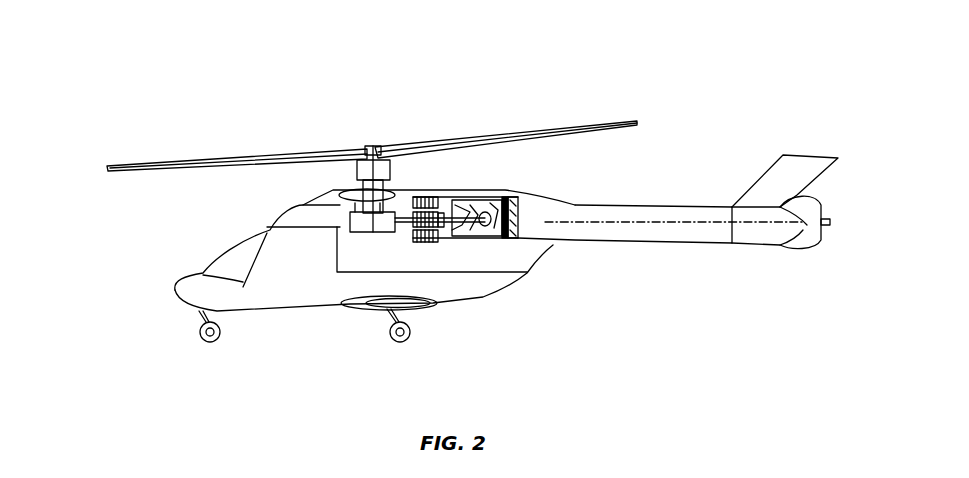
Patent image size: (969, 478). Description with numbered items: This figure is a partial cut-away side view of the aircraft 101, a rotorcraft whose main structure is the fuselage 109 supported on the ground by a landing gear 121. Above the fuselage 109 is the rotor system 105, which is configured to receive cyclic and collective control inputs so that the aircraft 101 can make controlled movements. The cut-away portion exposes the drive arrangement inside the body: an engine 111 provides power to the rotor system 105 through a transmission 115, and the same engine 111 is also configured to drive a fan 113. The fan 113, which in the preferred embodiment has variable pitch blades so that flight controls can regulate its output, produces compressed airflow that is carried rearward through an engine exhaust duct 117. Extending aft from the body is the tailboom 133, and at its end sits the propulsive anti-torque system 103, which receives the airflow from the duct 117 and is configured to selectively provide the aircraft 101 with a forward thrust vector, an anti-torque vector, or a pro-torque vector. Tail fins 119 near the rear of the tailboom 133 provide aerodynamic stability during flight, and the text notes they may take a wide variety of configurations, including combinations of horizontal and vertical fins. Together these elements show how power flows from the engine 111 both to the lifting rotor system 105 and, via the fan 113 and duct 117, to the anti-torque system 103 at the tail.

The aircraft 101 is at (253, 119).
The propulsive anti-torque system 103 is at (768, 267).
The rotor system 105 is at (368, 140).
The fuselage 109 is at (483, 297).
The engine 111 is at (480, 235).
The fan 113 is at (428, 243).
The transmission 115 is at (377, 210).
The engine exhaust duct 117 is at (683, 233).
The tail fins 119 is at (784, 156).
The landing gear 121 is at (206, 342).
The tailboom 133 is at (670, 205).